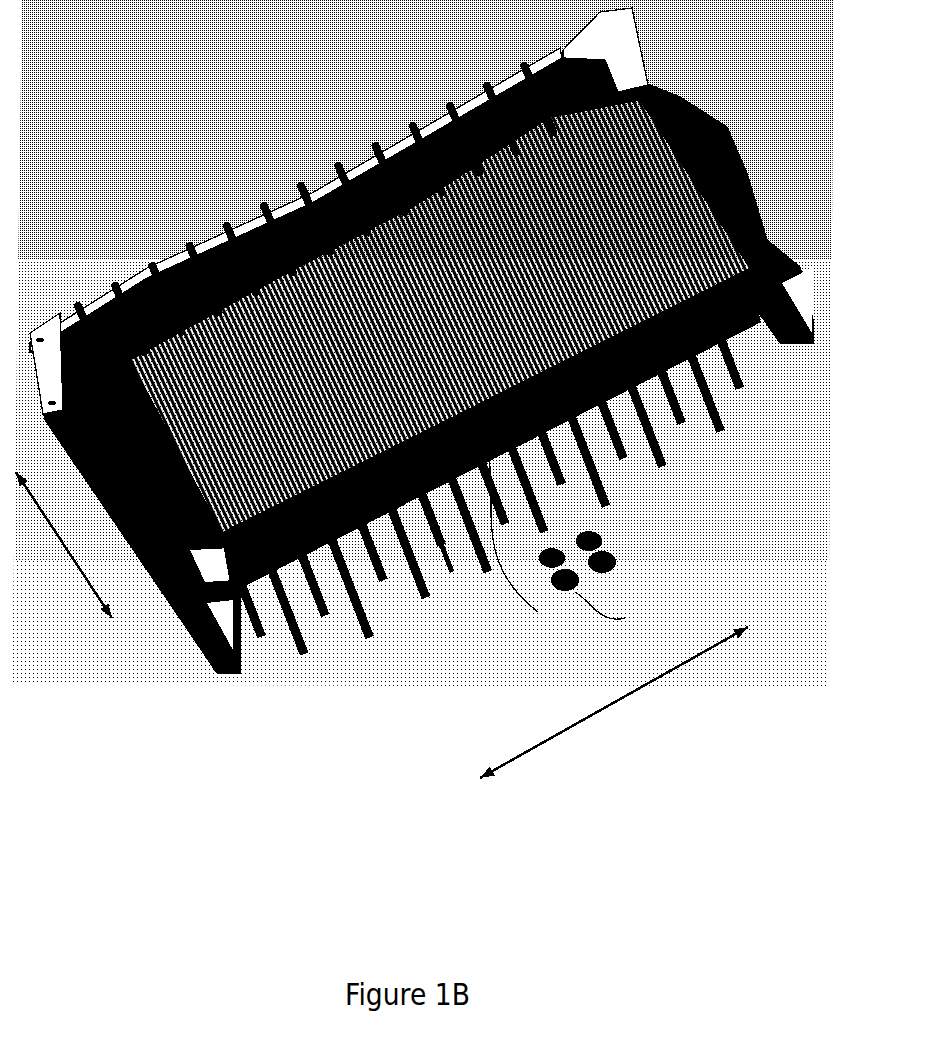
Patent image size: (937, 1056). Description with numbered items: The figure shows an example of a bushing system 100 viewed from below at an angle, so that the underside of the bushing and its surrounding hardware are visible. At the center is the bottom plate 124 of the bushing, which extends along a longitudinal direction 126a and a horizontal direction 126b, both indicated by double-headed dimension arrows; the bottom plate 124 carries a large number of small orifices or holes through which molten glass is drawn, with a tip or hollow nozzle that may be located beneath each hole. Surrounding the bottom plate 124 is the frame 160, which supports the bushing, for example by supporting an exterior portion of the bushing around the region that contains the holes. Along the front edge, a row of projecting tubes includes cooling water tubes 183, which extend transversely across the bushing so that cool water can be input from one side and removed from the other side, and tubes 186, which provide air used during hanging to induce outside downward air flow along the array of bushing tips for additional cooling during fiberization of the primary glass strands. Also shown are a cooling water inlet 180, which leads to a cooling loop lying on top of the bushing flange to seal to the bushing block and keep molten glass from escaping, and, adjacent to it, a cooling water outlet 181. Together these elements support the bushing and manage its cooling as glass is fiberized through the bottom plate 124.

The bushing system 100 is at (762, 48).
The bottom plate 124 is at (312, 213).
The longitudinal direction 126a is at (64, 545).
The horizontal direction 126b is at (614, 702).
The frame 160 is at (50, 350).
The cooling water inlet 180 is at (612, 565).
The cooling water outlet 181 is at (605, 608).
The cooling water tubes 183 is at (474, 588).
The tubes 186 is at (424, 564).